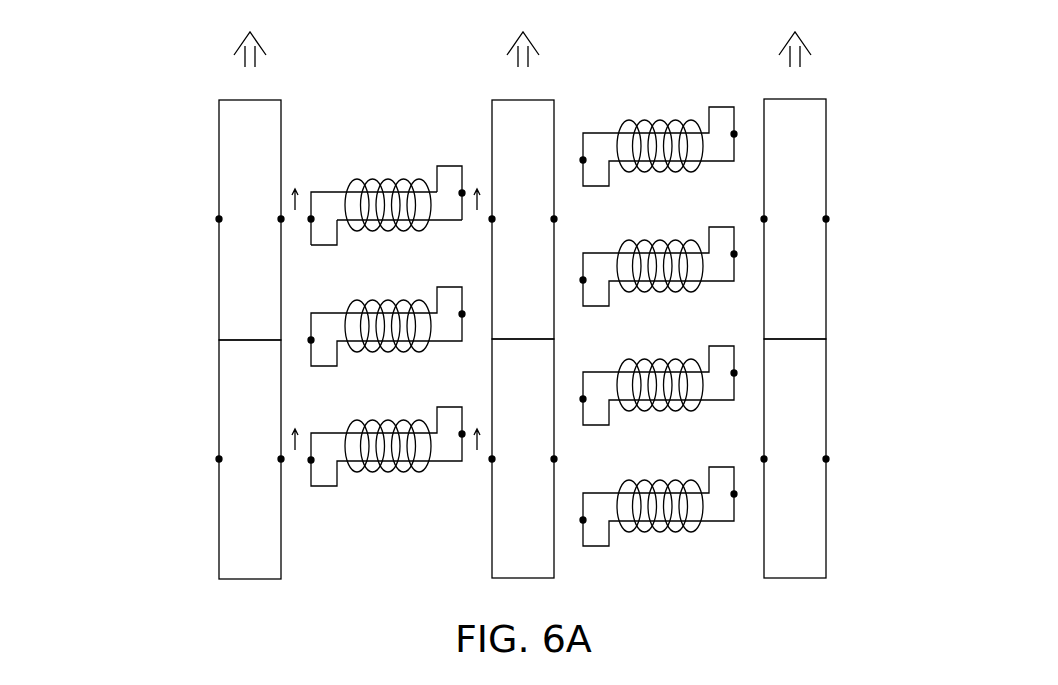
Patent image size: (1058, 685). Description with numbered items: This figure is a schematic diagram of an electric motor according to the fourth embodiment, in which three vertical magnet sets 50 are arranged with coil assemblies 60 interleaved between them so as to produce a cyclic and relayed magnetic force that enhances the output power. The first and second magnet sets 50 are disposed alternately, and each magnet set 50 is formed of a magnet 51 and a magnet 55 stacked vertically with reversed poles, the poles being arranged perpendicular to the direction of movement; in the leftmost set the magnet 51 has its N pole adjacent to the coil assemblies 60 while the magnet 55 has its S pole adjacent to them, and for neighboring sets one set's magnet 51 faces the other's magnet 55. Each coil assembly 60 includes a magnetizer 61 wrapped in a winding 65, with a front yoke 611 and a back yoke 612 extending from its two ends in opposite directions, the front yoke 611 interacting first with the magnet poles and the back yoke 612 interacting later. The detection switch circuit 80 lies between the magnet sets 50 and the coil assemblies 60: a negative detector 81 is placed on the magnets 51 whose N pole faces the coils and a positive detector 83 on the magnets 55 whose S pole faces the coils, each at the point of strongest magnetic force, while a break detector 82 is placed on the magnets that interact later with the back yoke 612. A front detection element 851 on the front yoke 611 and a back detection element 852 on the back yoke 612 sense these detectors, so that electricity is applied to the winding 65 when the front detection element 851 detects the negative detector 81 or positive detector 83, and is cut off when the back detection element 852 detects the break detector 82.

The magnet set 50 is at (505, 299).
The magnet 51 is at (228, 168).
The magnet 55 is at (225, 522).
The coil assembly 60 is at (515, 293).
The magnetizer 61 is at (450, 217).
The front yoke 611 is at (338, 247).
The back yoke 612 is at (448, 172).
The winding 65 is at (385, 230).
The detection switch circuit 80 is at (290, 244).
The negative detector 81 is at (283, 222).
The break detector 82 is at (491, 220).
The positive detector 83 is at (283, 462).
The front detection element 851 is at (310, 217).
The back detection element 852 is at (465, 190).